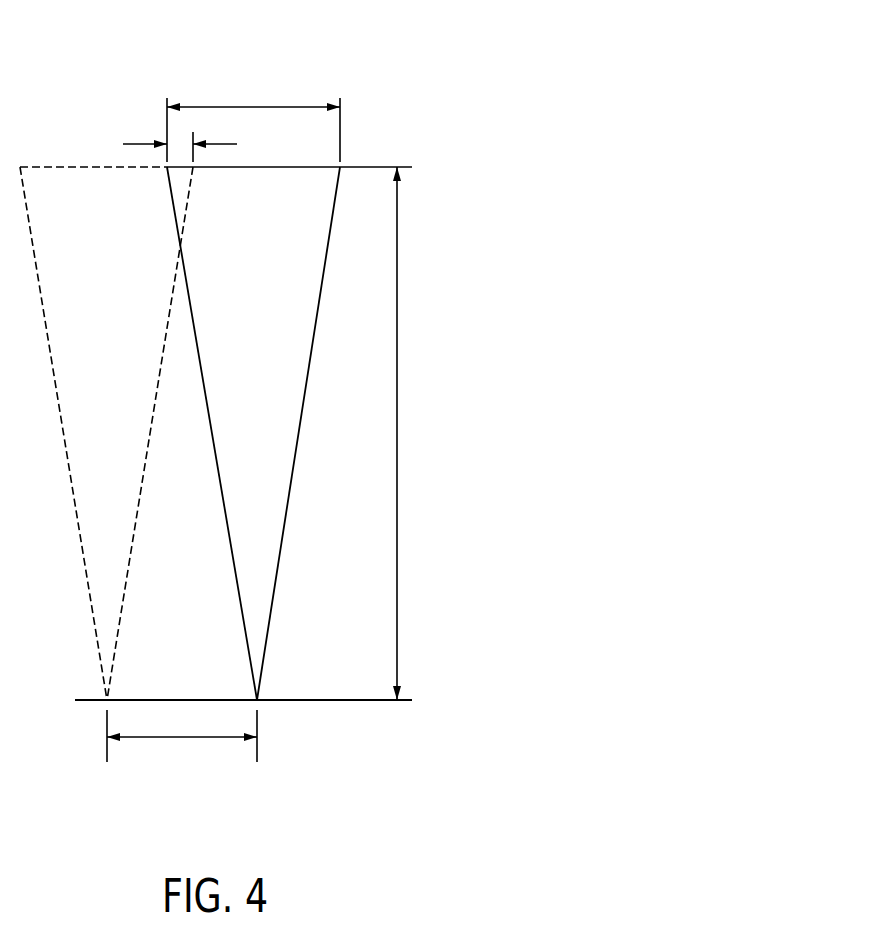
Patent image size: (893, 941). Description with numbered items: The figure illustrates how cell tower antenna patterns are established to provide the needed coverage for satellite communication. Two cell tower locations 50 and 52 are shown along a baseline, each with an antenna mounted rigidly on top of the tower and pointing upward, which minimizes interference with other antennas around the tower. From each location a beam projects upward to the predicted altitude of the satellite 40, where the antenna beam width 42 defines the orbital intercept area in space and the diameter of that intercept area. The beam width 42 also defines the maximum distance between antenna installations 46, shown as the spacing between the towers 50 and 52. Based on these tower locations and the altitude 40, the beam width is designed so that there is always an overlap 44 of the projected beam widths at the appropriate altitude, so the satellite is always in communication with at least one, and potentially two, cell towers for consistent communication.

The altitude 40 is at (406, 422).
The antenna beam width 42 is at (261, 92).
The overlap 44 is at (179, 146).
The maximum distance between antenna installations 46 is at (179, 746).
The cell tower location 50 is at (100, 695).
The cell tower location 52 is at (263, 705).